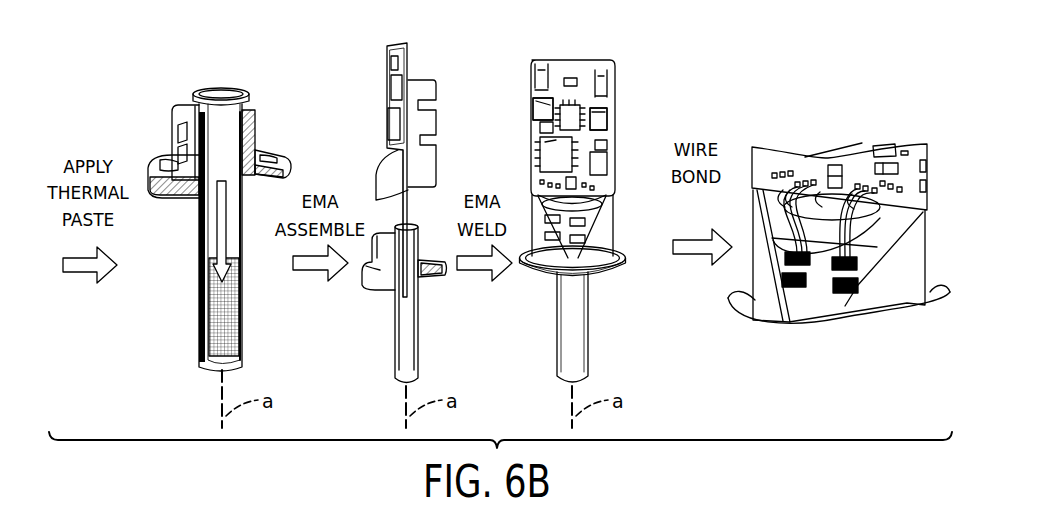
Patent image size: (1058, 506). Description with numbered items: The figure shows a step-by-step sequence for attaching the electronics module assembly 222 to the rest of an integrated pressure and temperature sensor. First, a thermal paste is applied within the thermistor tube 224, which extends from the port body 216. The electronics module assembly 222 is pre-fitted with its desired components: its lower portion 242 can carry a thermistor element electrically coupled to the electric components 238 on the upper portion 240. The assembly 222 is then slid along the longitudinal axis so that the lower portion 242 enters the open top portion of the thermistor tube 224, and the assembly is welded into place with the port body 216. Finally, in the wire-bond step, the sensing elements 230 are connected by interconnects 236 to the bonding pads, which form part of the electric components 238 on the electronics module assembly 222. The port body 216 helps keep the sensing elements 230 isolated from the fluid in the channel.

The port body 216 is at (180, 118).
The electronics module assembly 222 is at (410, 68).
The thermistor tube 224 is at (203, 265).
The sensing elements 230 is at (855, 283).
The interconnects 236 is at (838, 190).
The electric components 238 is at (607, 118).
The upper portion 240 is at (532, 128).
The lower portion 242 is at (405, 207).